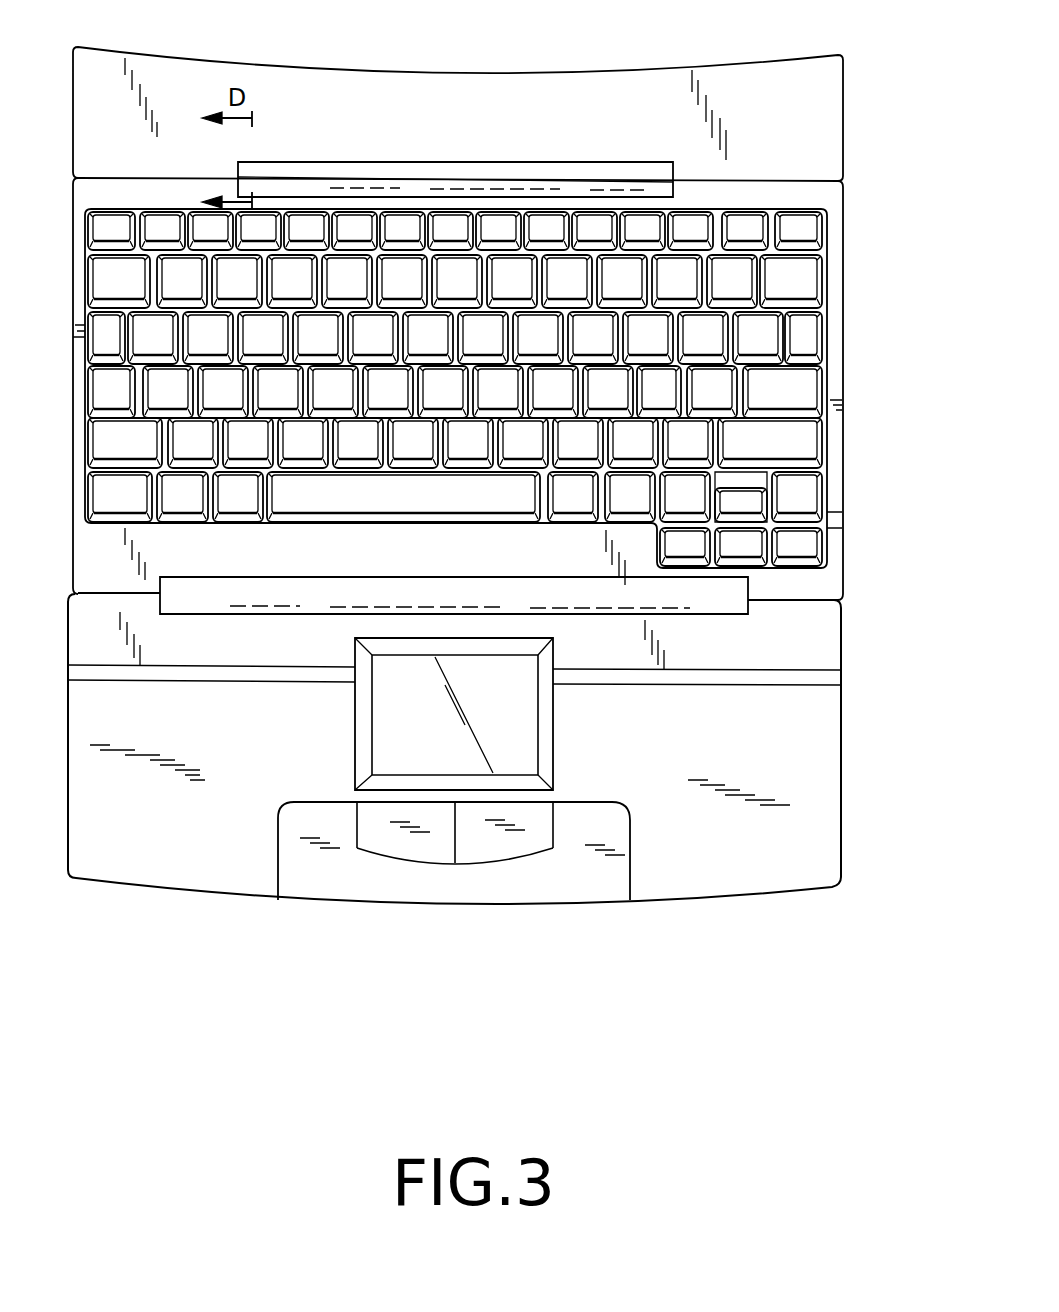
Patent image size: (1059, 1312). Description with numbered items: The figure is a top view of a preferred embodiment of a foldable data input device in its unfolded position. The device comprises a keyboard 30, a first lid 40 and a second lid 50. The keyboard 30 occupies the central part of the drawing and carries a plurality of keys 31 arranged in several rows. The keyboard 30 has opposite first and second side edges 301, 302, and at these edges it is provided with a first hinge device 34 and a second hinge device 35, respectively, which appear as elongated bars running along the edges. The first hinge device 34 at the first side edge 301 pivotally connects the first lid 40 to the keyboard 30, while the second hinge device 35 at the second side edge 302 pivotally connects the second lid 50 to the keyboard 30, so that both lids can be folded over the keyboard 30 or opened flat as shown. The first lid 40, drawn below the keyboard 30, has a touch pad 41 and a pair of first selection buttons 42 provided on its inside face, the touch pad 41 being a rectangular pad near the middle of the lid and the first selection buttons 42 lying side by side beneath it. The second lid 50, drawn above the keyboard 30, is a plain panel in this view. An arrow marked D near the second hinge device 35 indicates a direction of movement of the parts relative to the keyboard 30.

The keyboard 30 is at (501, 389).
The keys 31 is at (813, 283).
The first hinge device 34 is at (693, 600).
The second hinge device 35 is at (627, 173).
The first lid 40 is at (840, 822).
The touch pad 41 is at (498, 727).
The first selection buttons 42 is at (412, 838).
The second lid 50 is at (782, 128).
The first side edge 301 is at (787, 600).
The second side edge 302 is at (767, 182).